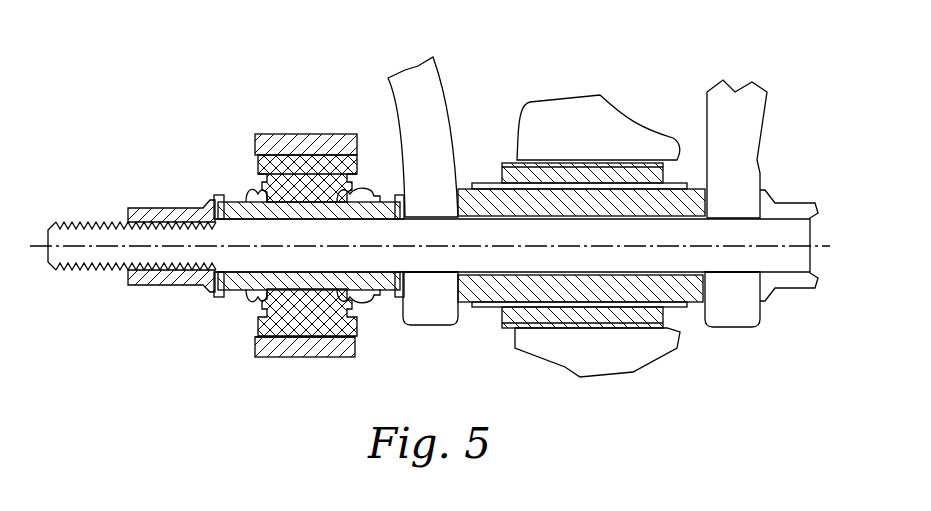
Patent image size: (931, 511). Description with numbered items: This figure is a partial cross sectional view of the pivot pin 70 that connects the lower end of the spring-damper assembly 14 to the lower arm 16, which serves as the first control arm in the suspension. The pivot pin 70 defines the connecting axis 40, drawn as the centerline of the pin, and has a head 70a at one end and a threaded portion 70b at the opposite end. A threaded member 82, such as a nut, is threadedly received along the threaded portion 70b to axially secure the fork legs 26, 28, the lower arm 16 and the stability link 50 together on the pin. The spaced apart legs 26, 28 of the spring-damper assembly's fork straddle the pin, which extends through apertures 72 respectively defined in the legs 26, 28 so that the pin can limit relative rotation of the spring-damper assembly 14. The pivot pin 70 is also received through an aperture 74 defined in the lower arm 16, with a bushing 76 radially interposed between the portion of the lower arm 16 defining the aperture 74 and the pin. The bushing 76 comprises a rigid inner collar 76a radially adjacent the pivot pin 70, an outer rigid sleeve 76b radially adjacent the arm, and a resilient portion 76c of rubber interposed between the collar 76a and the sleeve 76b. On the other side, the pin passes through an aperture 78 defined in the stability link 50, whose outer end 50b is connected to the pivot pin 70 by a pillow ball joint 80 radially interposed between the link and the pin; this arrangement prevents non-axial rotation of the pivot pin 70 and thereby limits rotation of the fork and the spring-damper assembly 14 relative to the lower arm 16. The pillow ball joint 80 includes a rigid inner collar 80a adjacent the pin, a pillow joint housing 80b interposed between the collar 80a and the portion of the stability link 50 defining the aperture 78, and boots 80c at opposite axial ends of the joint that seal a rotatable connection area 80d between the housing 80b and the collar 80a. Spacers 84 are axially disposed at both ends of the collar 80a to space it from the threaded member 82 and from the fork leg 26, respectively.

The spring-damper assembly 14 is at (758, 190).
The lower arm 16 is at (575, 118).
The leg 26 is at (430, 90).
The leg 28 is at (745, 302).
The connecting axis 40 is at (98, 247).
The stability link 50 is at (298, 132).
The outer end 50b is at (262, 358).
The pivot pin 70 is at (510, 258).
The head 70a is at (787, 222).
The threaded portion 70b is at (82, 268).
The aperture 72 is at (413, 255).
The aperture 74 is at (578, 320).
The bushing 76 is at (594, 246).
The inner collar 76a is at (562, 290).
The outer rigid sleeve 76b is at (597, 163).
The resilient portion 76c is at (615, 178).
The aperture 78 is at (297, 337).
The pillow ball joint 80 is at (312, 243).
The inner collar 80a is at (297, 210).
The pillow joint housing 80b is at (300, 167).
The boot 80c is at (248, 192).
The rotatable connection area 80d is at (316, 209).
The threaded member 82 is at (160, 282).
The spacer 84 is at (218, 200).